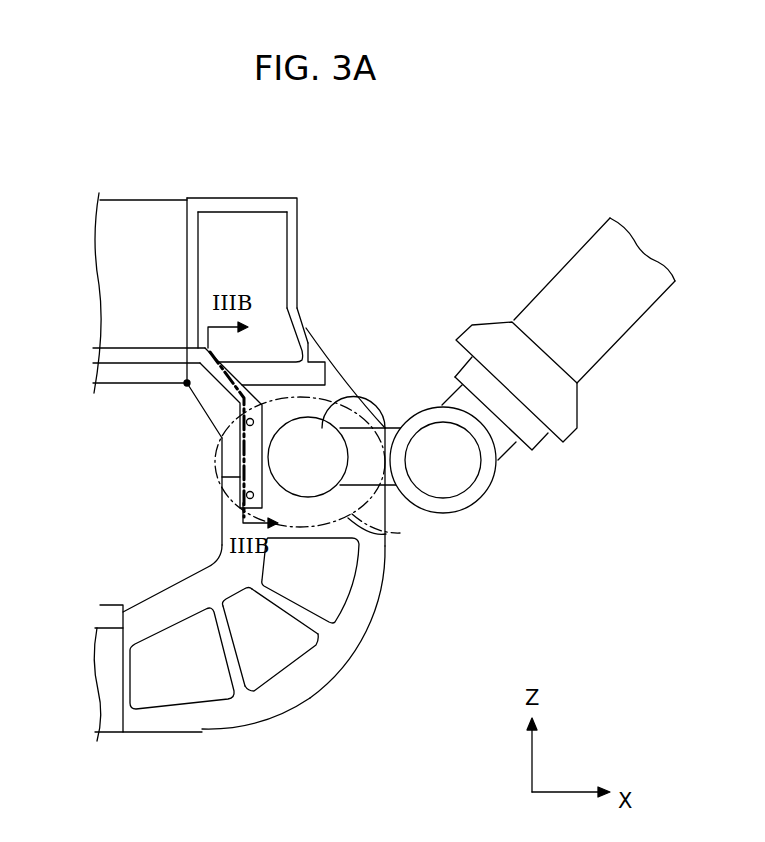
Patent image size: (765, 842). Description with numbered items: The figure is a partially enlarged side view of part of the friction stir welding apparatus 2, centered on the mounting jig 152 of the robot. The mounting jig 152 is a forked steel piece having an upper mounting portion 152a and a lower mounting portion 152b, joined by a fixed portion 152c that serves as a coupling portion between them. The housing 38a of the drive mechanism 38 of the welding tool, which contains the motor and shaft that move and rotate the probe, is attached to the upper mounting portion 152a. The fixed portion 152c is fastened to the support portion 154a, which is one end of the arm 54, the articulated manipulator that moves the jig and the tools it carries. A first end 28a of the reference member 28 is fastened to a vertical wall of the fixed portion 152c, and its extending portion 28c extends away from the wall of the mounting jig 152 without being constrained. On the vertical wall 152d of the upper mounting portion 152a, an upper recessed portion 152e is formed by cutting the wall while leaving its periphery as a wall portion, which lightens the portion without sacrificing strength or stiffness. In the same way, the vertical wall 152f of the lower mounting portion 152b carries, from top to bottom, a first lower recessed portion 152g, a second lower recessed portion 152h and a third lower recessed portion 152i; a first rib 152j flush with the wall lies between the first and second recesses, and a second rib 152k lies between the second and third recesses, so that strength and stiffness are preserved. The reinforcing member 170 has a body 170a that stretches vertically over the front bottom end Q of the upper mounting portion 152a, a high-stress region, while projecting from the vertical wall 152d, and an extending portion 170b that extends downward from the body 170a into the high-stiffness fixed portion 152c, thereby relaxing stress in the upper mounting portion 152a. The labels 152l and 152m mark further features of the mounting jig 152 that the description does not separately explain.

The friction stir welding apparatus 2 is at (118, 162).
The drive mechanism 38 is at (155, 190).
The housing 38a is at (165, 210).
The mounting jig 152 is at (302, 233).
The upper mounting portion 152a is at (313, 346).
The lower mounting portion 152b is at (336, 644).
The fixed portion 152c is at (400, 533).
The vertical wall 152d is at (288, 258).
The upper recessed portion 152e is at (246, 232).
The vertical wall 152f is at (278, 692).
The first lower recessed portion 152g is at (330, 586).
The second lower recessed portion 152h is at (280, 643).
The third lower recessed portion 152i is at (210, 693).
The first rib 152j is at (300, 583).
The second rib 152k is at (236, 665).
The side surface of support member 152l is at (400, 582).
The curved portion of support member 152m is at (206, 552).
The support portion 154a is at (318, 428).
The reinforcing member 170 is at (358, 366).
The body 170a is at (345, 380).
The extending portion 170b is at (215, 408).
The arm 54 is at (524, 254).
The reference member 28 is at (132, 373).
The first end 28a is at (239, 480).
The extending portion 28c is at (120, 353).
The front bottom end Q is at (187, 384).